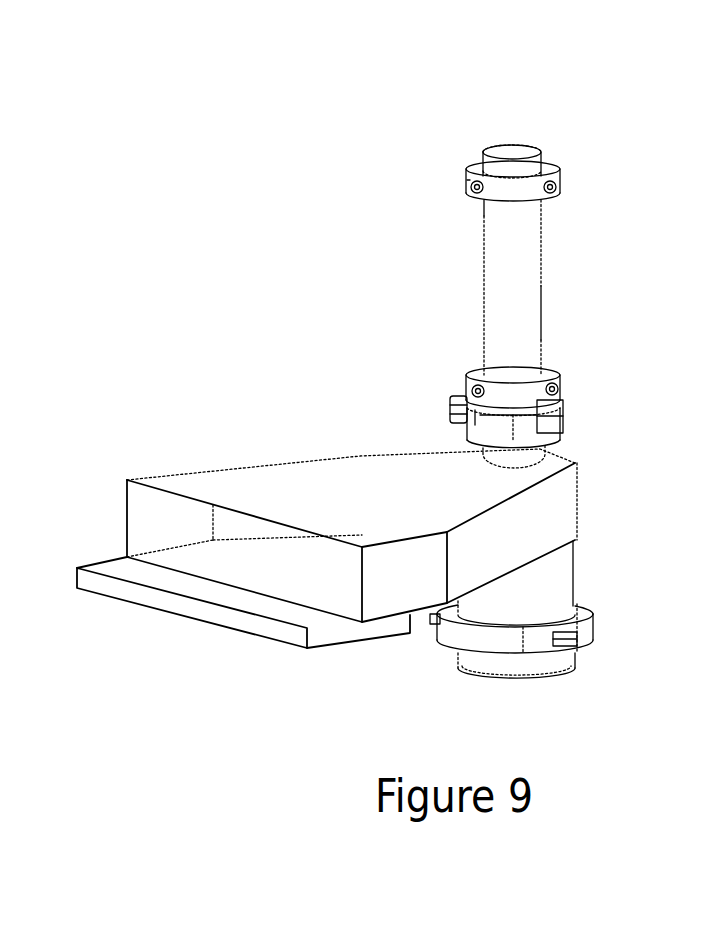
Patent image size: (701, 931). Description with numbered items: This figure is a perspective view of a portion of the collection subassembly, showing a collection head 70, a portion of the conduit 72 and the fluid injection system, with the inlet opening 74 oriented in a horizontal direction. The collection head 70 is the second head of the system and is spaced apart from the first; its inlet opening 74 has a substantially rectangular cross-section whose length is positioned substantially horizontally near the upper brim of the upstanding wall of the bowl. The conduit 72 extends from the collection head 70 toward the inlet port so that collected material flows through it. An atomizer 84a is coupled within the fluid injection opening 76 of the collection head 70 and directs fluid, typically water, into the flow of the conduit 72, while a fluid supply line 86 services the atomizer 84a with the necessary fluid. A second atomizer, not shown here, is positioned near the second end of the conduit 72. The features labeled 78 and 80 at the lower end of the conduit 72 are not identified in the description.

The fluid supply line 86 is at (521, 98).
The atomizer 84a is at (501, 135).
The collection head 70 is at (550, 285).
The fluid injection opening 76 is at (570, 383).
The inlet opening 74 is at (238, 575).
The conduit 72 is at (559, 690).
The lower end of cylinder 80 is at (467, 690).
The ring clamp 78 is at (575, 610).